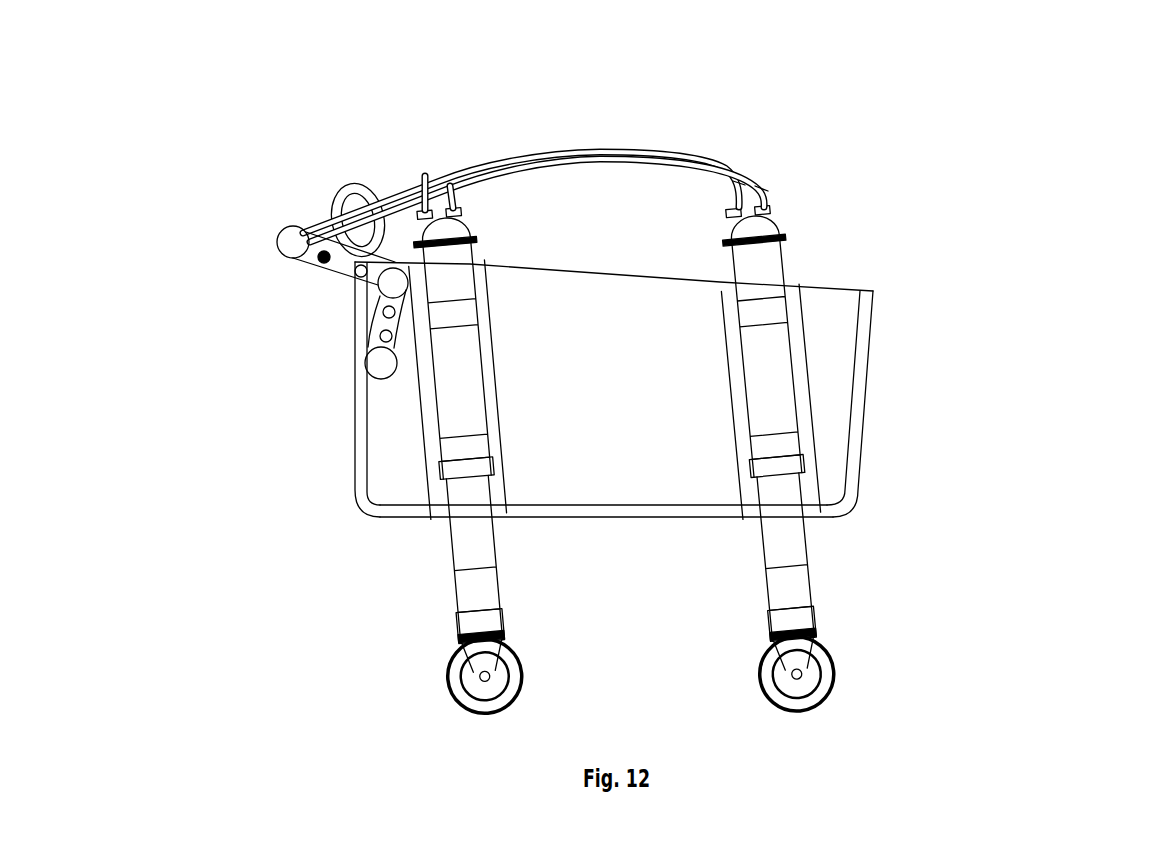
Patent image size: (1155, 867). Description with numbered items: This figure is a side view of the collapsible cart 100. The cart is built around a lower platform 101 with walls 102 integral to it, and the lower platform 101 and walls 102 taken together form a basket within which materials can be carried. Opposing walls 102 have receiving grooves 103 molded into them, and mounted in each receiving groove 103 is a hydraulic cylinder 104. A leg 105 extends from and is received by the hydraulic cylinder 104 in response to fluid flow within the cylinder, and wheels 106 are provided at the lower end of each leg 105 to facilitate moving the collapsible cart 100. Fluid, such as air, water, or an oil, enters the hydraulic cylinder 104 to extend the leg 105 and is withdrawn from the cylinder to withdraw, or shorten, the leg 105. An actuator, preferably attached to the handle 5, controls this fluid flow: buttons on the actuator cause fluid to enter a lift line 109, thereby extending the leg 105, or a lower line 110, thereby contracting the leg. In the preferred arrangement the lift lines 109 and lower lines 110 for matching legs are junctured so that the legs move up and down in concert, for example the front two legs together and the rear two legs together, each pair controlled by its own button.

The collapsible cart 100 is at (960, 505).
The lower platform 101 is at (705, 519).
The walls 102 is at (352, 404).
The receiving grooves 103 is at (422, 459).
The hydraulic cylinder 104 is at (430, 348).
The leg 105 is at (442, 563).
The wheels 106 is at (448, 686).
The lift line 109 is at (458, 196).
The lower line 110 is at (425, 180).
The handle 5 is at (278, 232).